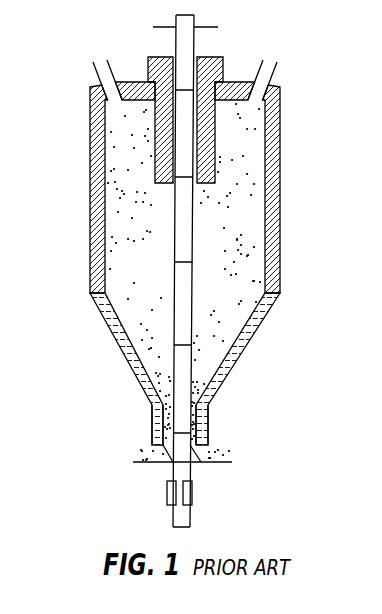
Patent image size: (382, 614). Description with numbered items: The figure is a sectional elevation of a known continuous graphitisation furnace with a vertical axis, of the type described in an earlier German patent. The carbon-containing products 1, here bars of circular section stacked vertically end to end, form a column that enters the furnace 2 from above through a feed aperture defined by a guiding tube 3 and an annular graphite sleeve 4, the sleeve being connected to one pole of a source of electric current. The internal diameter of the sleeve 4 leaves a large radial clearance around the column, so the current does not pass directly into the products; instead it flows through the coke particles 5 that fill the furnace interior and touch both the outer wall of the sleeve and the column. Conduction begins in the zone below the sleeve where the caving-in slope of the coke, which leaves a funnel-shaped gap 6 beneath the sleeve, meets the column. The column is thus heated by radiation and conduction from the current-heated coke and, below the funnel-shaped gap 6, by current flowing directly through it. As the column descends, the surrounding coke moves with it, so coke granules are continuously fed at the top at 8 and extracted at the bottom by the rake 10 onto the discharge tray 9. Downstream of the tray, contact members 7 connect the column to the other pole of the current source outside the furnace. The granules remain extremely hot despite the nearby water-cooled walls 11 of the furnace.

The carbon-containing products 1 is at (187, 43).
The furnace 2 is at (88, 235).
The guiding tube 3 is at (176, 40).
The annular graphite sleeve 4 is at (213, 139).
The coke particles 5 is at (140, 162).
The funnel-shaped gap 6 is at (200, 190).
The contact members 7 is at (168, 495).
The coke granule feed 8 is at (95, 71).
The discharge tray 9 is at (218, 465).
The rake 10 is at (166, 437).
The water-cooled walls 11 is at (241, 351).